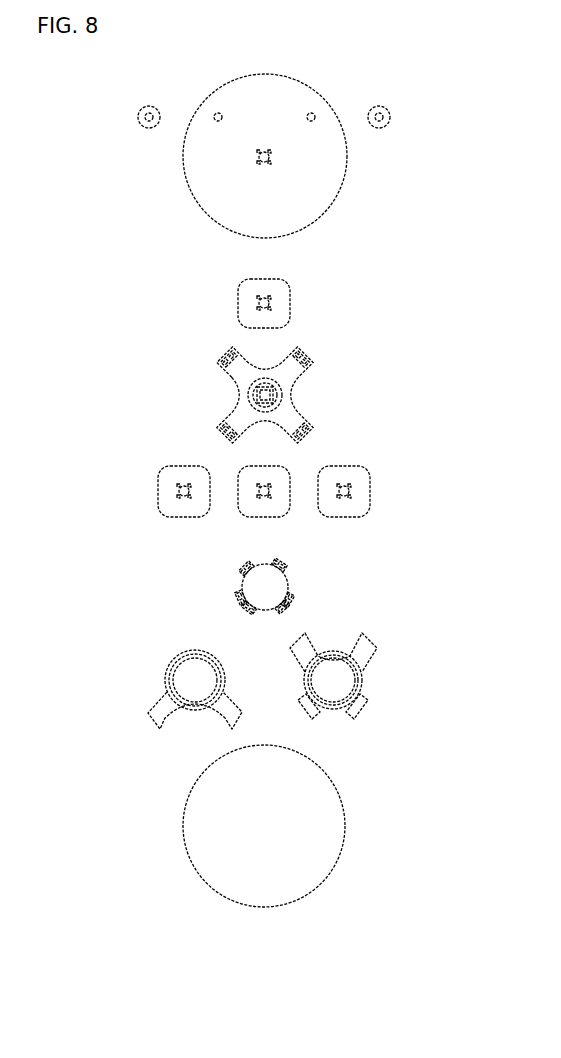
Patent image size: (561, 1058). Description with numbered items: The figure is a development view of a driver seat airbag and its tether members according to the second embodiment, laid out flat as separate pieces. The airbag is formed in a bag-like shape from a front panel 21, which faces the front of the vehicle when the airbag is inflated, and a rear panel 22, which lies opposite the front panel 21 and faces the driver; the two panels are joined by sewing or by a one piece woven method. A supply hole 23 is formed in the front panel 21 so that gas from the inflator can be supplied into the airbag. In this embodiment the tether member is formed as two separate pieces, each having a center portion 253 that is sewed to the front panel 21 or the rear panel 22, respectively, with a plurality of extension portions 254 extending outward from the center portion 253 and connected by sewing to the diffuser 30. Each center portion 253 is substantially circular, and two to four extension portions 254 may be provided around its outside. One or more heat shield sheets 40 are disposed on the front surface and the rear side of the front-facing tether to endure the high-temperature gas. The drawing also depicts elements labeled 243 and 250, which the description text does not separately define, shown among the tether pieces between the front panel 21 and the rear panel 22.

The front panel 21 is at (345, 173).
The rear panel 22 is at (338, 860).
The supply hole 23 is at (271, 153).
The diffuser 30 is at (303, 591).
The heat shield sheet 40 is at (290, 298).
The connector ring 243 is at (161, 681).
The cross-shaped mount 250 is at (320, 555).
The center portion 253 is at (282, 393).
The extension portion 254 is at (225, 720).